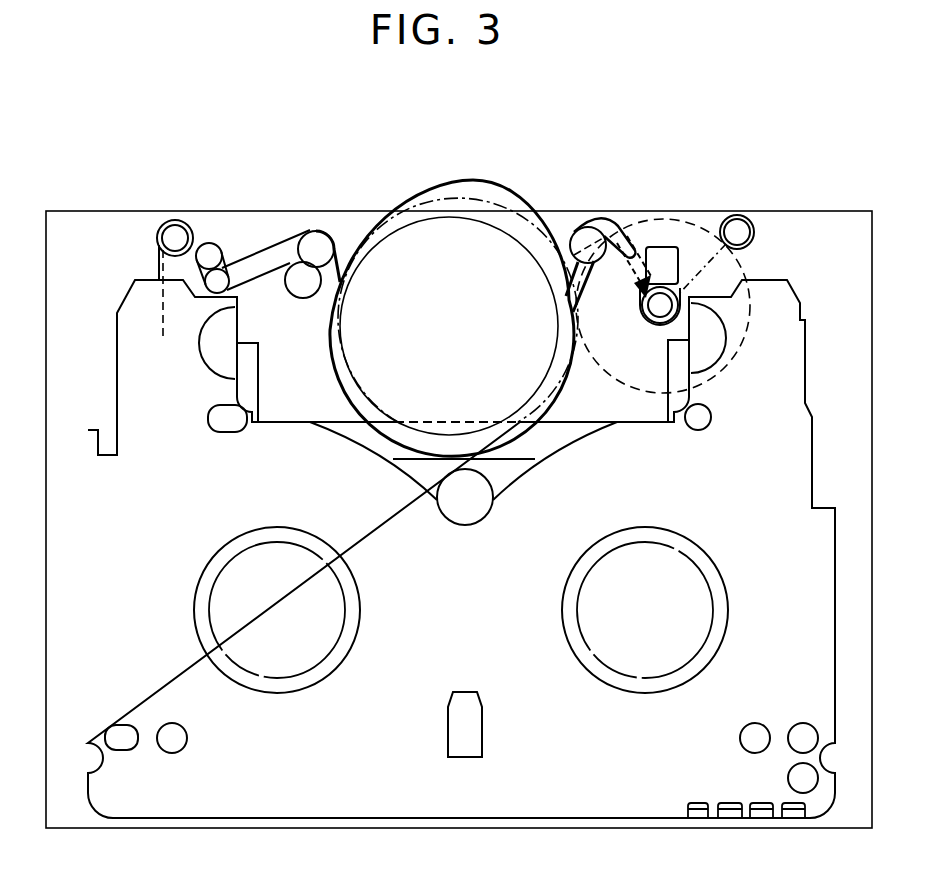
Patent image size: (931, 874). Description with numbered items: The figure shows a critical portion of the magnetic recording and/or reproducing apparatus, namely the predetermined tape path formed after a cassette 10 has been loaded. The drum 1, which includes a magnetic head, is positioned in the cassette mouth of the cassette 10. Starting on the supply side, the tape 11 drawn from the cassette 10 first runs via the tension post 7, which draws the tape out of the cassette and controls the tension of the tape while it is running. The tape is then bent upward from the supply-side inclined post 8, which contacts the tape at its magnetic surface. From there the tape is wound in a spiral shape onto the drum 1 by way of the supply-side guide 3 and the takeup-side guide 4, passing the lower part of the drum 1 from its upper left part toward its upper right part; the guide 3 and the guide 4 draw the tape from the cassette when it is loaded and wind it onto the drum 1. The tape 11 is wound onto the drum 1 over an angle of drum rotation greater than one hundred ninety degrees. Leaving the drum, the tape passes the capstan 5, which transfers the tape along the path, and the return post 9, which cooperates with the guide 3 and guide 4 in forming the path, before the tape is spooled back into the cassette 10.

The drum 1 is at (372, 250).
The supply-side guide 3 is at (318, 240).
The takeup-side guide 4 is at (577, 231).
The capstan 5 is at (661, 300).
The tension post 7 is at (175, 235).
The supply-side inclined post 8 is at (212, 258).
The return post 9 is at (740, 228).
The cassette 10 is at (137, 297).
The tape 11 is at (263, 258).